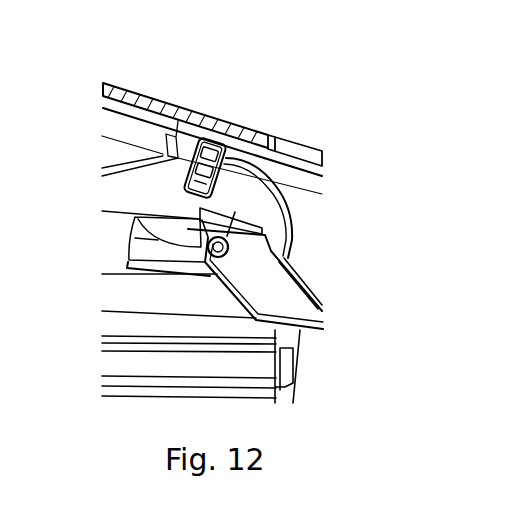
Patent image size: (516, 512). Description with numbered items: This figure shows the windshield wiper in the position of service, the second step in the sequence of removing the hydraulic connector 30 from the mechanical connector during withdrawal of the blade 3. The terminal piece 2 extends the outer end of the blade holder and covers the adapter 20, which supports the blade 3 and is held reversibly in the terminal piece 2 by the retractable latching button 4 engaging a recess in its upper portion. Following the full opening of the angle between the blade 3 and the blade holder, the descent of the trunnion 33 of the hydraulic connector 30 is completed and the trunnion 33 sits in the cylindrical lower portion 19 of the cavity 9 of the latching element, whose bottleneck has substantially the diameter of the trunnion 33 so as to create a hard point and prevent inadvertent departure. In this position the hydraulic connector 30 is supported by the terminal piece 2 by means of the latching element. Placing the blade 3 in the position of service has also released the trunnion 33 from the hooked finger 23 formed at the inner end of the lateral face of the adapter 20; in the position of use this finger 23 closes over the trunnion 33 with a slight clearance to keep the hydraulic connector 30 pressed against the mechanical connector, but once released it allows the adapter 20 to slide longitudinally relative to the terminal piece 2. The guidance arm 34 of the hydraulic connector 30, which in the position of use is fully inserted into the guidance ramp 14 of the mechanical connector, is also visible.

The terminal piece 2 is at (152, 108).
The blade 3 is at (117, 317).
The retractable latching button 4 is at (297, 153).
The cavity 9 is at (130, 252).
The guidance ramp 14 is at (302, 350).
The lower portion of the cavity 19 is at (282, 257).
The adapter 20 is at (307, 208).
The finger 23 is at (163, 153).
The hydraulic connector 30 is at (117, 197).
The trunnion 33 is at (218, 247).
The guidance arm 34 is at (300, 318).